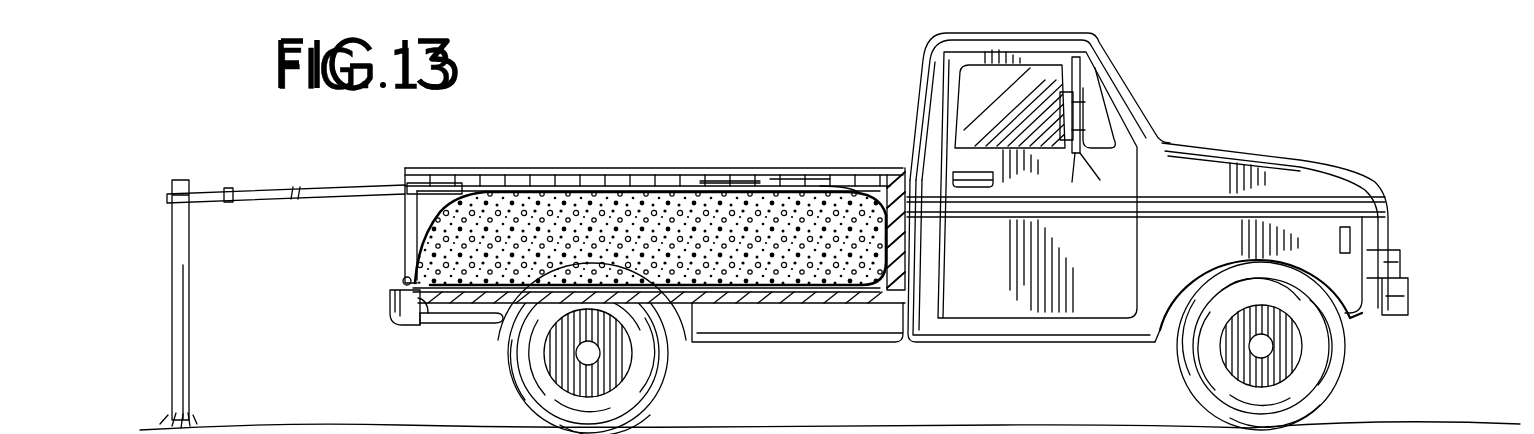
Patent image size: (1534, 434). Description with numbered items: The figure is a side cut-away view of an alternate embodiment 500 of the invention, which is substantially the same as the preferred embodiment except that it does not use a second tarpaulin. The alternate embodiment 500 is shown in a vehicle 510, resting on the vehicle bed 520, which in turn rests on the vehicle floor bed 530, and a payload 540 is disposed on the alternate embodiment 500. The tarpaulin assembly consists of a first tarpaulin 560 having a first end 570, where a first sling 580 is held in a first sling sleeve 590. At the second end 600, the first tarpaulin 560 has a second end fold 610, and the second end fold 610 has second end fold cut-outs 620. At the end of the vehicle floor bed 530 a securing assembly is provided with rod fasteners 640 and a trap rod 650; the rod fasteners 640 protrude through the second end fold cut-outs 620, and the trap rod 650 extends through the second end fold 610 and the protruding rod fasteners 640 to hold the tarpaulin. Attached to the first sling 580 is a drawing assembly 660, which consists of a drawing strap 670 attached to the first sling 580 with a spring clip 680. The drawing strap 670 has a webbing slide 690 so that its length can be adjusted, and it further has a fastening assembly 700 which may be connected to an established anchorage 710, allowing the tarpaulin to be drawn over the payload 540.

The alternate embodiment 500 is at (853, 233).
The vehicle 510 is at (1305, 160).
The vehicle bed 520 is at (730, 312).
The vehicle floor bed 530 is at (851, 160).
The payload 540 is at (852, 210).
The first tarpaulin 560 is at (490, 293).
The first end 570 is at (888, 176).
The first sling 580 is at (793, 182).
The first sling sleeve 590 is at (830, 180).
The second end 600 is at (428, 296).
The second end fold 610 is at (415, 323).
The second end fold cut-outs 620 is at (390, 308).
The rod fasteners 640 is at (405, 268).
The trap rod 650 is at (402, 278).
The drawing assembly 660 is at (552, 190).
The drawing strap 670 is at (488, 189).
The spring clip 680 is at (743, 178).
The webbing slide 690 is at (416, 184).
The fastening assembly 700 is at (200, 194).
The established anchorage 710 is at (172, 245).